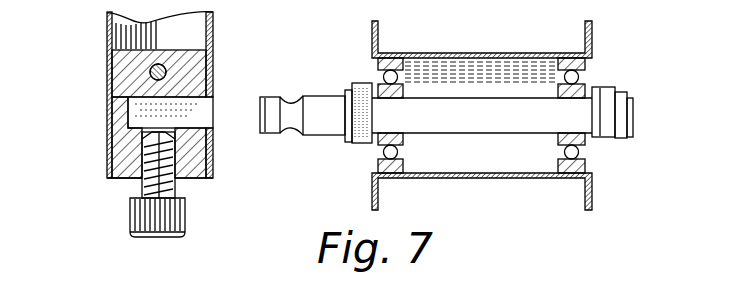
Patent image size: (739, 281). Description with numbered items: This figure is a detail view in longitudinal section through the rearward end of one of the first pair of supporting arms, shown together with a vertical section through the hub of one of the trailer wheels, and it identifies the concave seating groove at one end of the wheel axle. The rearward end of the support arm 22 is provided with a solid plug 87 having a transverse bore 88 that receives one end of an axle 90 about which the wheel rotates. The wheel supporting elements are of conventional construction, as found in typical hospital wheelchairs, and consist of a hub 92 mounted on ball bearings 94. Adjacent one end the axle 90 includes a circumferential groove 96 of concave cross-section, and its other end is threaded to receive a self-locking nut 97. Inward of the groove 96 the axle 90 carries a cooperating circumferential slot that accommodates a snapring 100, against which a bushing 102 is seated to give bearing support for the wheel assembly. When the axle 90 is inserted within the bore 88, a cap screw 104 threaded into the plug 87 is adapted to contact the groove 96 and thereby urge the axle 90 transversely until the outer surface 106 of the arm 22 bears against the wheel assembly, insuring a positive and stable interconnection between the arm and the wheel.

The support arm 22 is at (107, 40).
The solid plug 87 is at (125, 78).
The outer surface 106 is at (215, 71).
The transverse bore 88 is at (196, 128).
The cap screw 104 is at (178, 212).
The hub 92 is at (511, 50).
The ball bearings 94 is at (375, 63).
The axle 90 is at (330, 105).
The circumferential groove 96 is at (290, 107).
The snapring 100 is at (343, 137).
The bushing 102 is at (357, 145).
The self-locking nut 97 is at (600, 102).